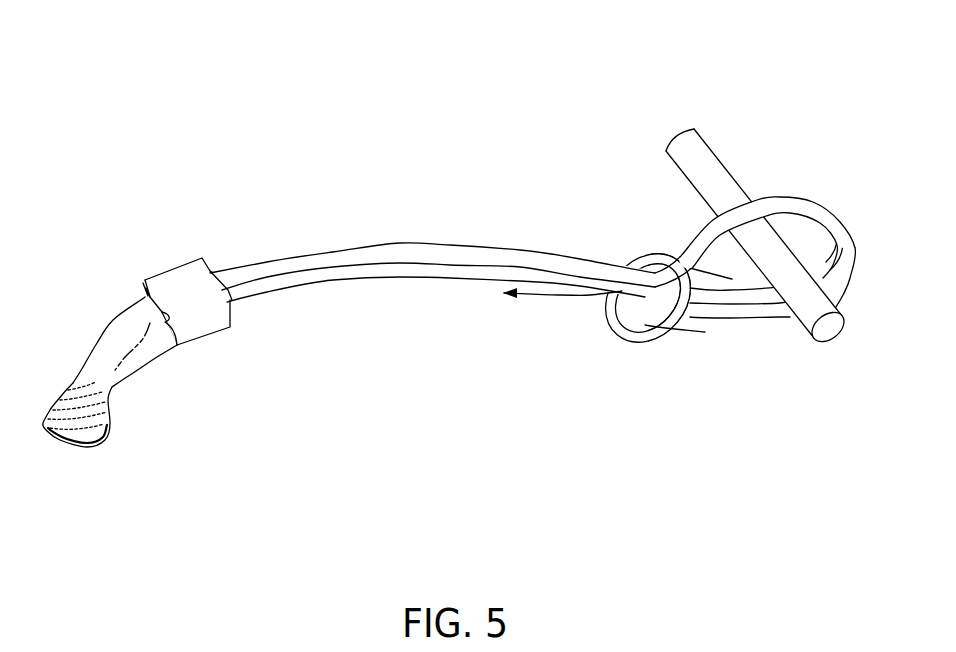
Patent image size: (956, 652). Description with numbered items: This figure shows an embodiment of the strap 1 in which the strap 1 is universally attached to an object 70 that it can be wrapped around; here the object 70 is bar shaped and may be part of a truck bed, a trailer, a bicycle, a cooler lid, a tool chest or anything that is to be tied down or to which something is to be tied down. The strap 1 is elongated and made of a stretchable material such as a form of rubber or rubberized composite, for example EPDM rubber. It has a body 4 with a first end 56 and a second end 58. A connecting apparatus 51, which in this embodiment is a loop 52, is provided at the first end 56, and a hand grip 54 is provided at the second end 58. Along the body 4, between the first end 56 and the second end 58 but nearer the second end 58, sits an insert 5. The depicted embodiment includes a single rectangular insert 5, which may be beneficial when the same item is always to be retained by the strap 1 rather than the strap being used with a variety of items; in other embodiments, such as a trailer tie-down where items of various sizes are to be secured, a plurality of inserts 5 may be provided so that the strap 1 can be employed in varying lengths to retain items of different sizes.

The strap 1 is at (313, 68).
The body 4 is at (382, 243).
The insert 5 is at (178, 277).
The connecting apparatus 51 is at (750, 235).
The loop 52 is at (653, 329).
The hand grip 54 is at (70, 447).
The first end 56 is at (690, 243).
The second end 58 is at (100, 345).
The object 70 is at (713, 172).